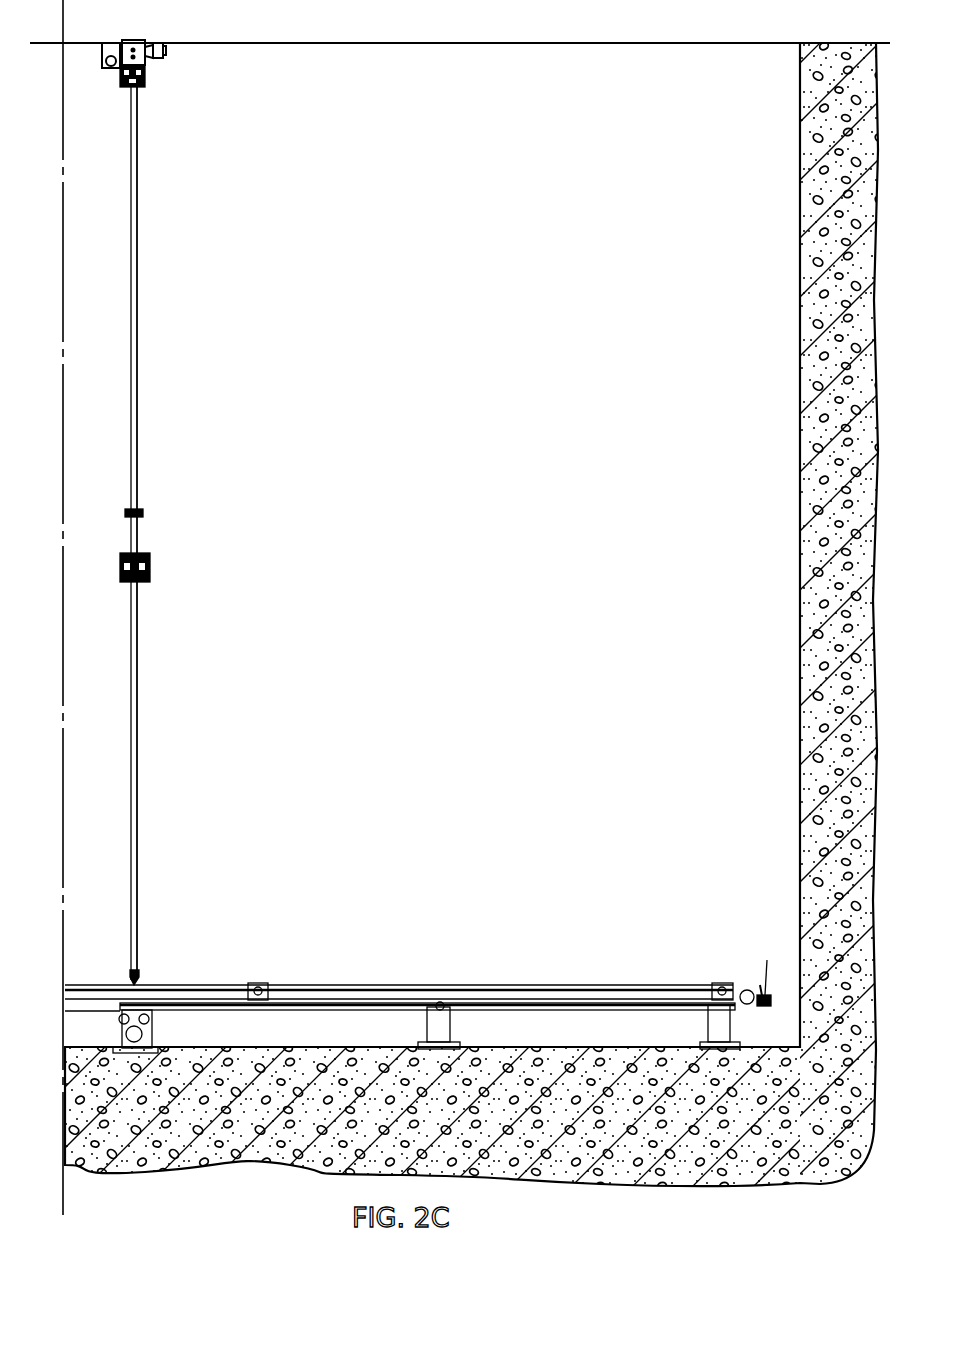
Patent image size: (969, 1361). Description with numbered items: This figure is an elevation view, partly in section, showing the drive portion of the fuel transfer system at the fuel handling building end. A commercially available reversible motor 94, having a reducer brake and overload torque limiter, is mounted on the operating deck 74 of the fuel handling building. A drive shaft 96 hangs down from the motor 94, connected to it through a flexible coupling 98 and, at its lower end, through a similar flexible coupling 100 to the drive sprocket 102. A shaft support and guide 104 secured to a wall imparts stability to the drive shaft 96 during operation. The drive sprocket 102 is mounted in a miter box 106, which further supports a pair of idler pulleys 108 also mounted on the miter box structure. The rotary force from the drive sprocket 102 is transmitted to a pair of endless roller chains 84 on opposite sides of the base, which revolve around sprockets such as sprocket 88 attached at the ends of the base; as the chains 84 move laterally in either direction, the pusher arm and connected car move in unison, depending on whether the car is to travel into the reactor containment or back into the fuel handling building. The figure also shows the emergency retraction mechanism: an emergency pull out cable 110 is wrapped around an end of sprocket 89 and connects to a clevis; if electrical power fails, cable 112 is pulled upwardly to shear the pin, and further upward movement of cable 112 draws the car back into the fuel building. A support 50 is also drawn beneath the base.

The operating deck 74 is at (262, 42).
The reversible motor 94 is at (143, 45).
The flexible coupling 98 is at (145, 79).
The drive shaft 96 is at (138, 320).
The shaft support and guide 104 is at (150, 572).
The flexible coupling 100 is at (138, 981).
The endless roller chains 84 is at (255, 1010).
The drive sprocket 102 is at (153, 1027).
The idler pulleys 108 is at (119, 1021).
The miter box 106 is at (158, 1048).
The support pedestal 50 is at (451, 1036).
The sprocket 89 is at (757, 996).
The sprocket 88 is at (752, 1005).
The emergency pull out cable 110 is at (763, 994).
The cable 112 is at (770, 948).